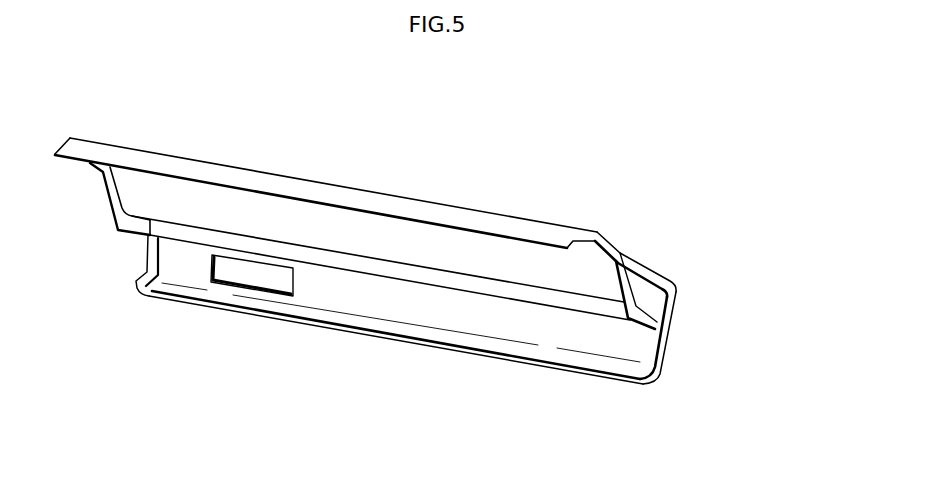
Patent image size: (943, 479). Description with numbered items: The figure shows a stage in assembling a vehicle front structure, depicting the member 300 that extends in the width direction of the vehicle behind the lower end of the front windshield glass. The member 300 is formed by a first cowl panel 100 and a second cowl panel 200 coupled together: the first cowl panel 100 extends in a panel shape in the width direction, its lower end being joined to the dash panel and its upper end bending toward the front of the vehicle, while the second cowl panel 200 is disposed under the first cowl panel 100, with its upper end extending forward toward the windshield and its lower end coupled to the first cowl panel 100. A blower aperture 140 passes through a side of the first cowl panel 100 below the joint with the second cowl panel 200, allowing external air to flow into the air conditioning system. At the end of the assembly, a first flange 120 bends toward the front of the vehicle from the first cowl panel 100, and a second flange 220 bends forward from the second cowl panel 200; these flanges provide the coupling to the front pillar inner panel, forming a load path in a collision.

The member 300 is at (687, 303).
The second cowl panel 200 is at (346, 194).
The second flange 220 is at (622, 289).
The first cowl panel 100 is at (661, 278).
The first flange 120 is at (661, 340).
The blower aperture 140 is at (247, 272).